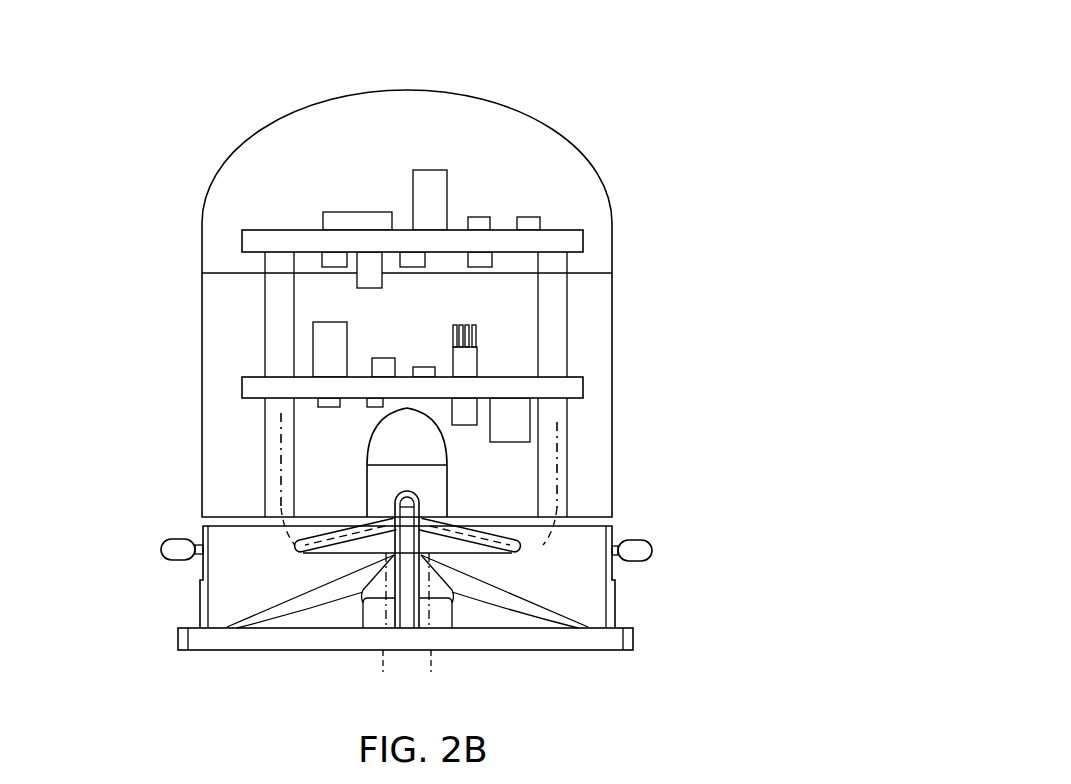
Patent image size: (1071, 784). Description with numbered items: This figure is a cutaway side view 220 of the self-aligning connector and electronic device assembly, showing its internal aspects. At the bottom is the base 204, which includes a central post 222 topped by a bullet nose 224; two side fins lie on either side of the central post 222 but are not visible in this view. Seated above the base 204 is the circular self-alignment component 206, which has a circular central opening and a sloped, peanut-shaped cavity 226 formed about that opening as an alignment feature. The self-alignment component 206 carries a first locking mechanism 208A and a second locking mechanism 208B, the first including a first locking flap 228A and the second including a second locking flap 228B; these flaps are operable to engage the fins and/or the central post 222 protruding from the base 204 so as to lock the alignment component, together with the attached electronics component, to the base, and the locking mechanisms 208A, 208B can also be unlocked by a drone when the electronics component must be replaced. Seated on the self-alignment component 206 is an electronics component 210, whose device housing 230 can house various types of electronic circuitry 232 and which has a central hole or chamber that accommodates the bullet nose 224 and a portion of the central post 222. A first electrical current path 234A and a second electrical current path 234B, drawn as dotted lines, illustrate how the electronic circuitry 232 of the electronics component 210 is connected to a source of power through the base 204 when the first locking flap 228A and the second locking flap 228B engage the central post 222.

The cutaway side view 220 is at (667, 58).
The electronics component 210 is at (600, 184).
The device housing 230 is at (201, 328).
The electronic circuitry 232 is at (299, 230).
The first electrical current path 234A is at (281, 437).
The second electrical current path 234B is at (557, 432).
The bullet nose 224 is at (449, 438).
The first locking flap 228A is at (372, 520).
The second locking flap 228B is at (445, 521).
The self-alignment component 206 is at (614, 531).
The first locking mechanism 208A is at (160, 541).
The second locking mechanism 208B is at (654, 538).
The base 204 is at (633, 636).
The sloped, peanut-shaped cavity 226 is at (350, 610).
The central post 222 is at (463, 610).